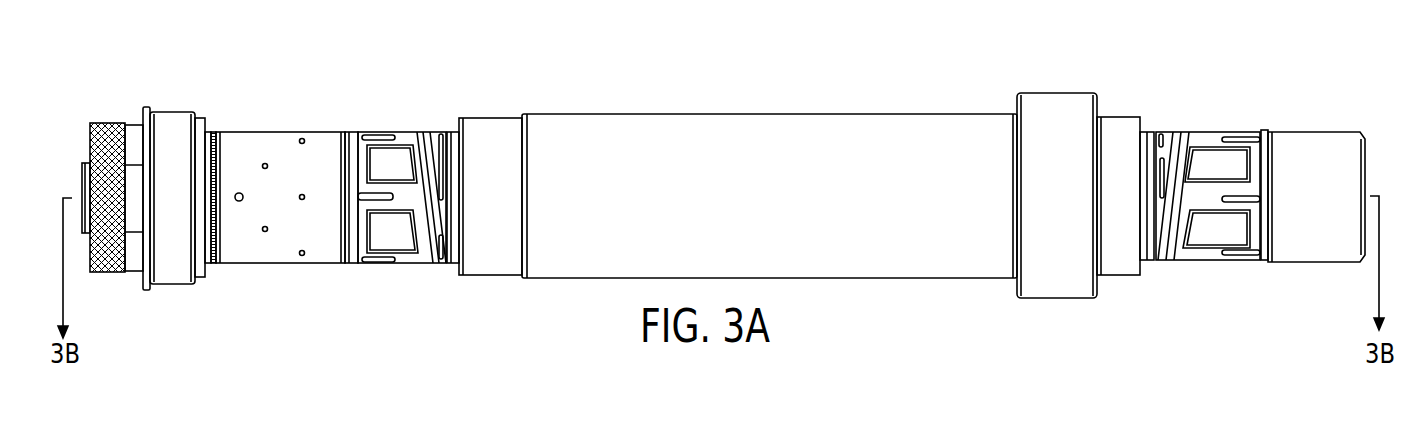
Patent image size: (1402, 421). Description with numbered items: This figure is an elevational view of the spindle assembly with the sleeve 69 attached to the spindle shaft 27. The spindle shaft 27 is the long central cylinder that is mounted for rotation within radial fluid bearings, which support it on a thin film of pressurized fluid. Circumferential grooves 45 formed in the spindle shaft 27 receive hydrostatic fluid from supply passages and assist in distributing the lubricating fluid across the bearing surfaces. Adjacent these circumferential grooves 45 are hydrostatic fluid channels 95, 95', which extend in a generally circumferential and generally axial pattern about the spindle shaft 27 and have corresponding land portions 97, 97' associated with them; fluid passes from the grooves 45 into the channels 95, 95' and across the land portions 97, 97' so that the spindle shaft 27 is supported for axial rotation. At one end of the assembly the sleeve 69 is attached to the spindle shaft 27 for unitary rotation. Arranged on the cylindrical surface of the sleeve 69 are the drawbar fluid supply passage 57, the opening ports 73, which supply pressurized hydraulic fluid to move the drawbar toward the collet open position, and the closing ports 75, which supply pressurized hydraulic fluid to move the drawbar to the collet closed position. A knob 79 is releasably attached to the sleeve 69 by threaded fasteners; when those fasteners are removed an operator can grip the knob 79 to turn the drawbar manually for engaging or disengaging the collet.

The spindle shaft 27 is at (787, 108).
The circumferential grooves 45 is at (350, 266).
The drawbar fluid supply passage 57 is at (239, 201).
The sleeve 69 is at (234, 131).
The opening ports 73 is at (265, 163).
The closing ports 75 is at (302, 138).
The knob 79 is at (90, 148).
The hydrostatic fluid channels 95 is at (402, 162).
The hydrostatic fluid channels 95' is at (1208, 155).
The land portions 97 is at (402, 127).
The land portions 97' is at (1216, 263).